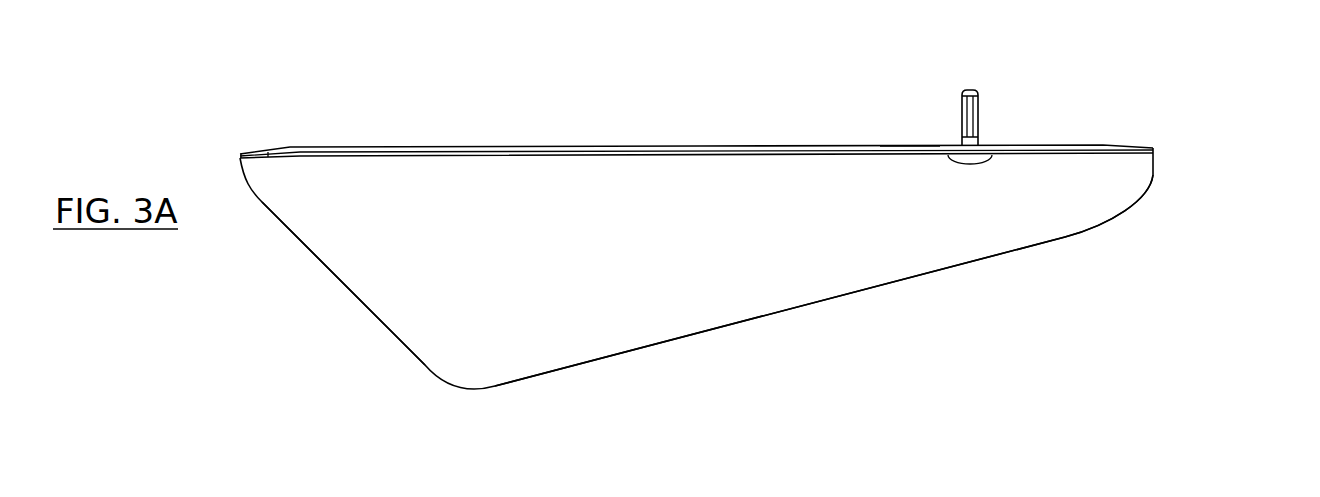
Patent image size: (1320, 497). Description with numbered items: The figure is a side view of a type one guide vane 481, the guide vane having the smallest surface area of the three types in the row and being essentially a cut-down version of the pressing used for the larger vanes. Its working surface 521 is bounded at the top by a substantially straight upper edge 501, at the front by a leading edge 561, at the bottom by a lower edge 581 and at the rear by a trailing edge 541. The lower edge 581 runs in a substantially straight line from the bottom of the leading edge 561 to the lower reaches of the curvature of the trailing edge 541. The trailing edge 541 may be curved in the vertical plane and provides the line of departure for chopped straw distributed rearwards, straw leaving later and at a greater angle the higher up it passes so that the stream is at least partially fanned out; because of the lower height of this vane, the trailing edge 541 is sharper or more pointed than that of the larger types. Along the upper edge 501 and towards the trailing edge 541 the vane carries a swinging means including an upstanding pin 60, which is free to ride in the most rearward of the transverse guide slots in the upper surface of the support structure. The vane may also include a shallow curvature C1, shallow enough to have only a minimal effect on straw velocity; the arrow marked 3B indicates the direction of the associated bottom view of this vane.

The upper edge 501 is at (507, 147).
The working surface 521 is at (611, 261).
The leading edge 561 is at (345, 286).
The lower edge 581 is at (860, 297).
The trailing edge 541 is at (1140, 207).
The upstanding pin 60 is at (980, 112).
The curvature C1 is at (911, 145).
The type 1 guide vane 481 is at (1195, 168).
The section view 3B direction 3B is at (709, 113).